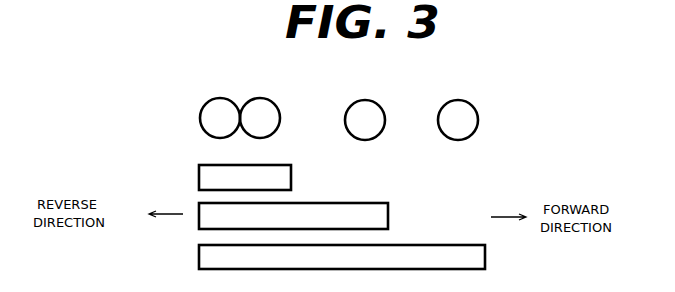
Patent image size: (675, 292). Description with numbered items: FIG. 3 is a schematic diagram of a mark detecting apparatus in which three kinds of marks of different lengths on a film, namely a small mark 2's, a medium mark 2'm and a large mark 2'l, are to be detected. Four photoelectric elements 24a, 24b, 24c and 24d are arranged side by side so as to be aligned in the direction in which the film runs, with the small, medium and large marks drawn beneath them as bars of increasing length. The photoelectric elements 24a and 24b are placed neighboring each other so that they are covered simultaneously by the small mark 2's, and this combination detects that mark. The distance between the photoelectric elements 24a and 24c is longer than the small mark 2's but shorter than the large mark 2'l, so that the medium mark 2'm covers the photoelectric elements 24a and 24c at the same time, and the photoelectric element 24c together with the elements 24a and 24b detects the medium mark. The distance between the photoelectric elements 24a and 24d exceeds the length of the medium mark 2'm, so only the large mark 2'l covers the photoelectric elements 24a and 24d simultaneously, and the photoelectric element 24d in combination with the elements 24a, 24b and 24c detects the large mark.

The photoelectric element 24a is at (218, 99).
The photoelectric element 24b is at (269, 99).
The photoelectric element 24c is at (369, 101).
The photoelectric element 24d is at (464, 101).
The small mark 2's is at (269, 167).
The medium mark 2'm is at (321, 202).
The large mark 2'l is at (362, 248).